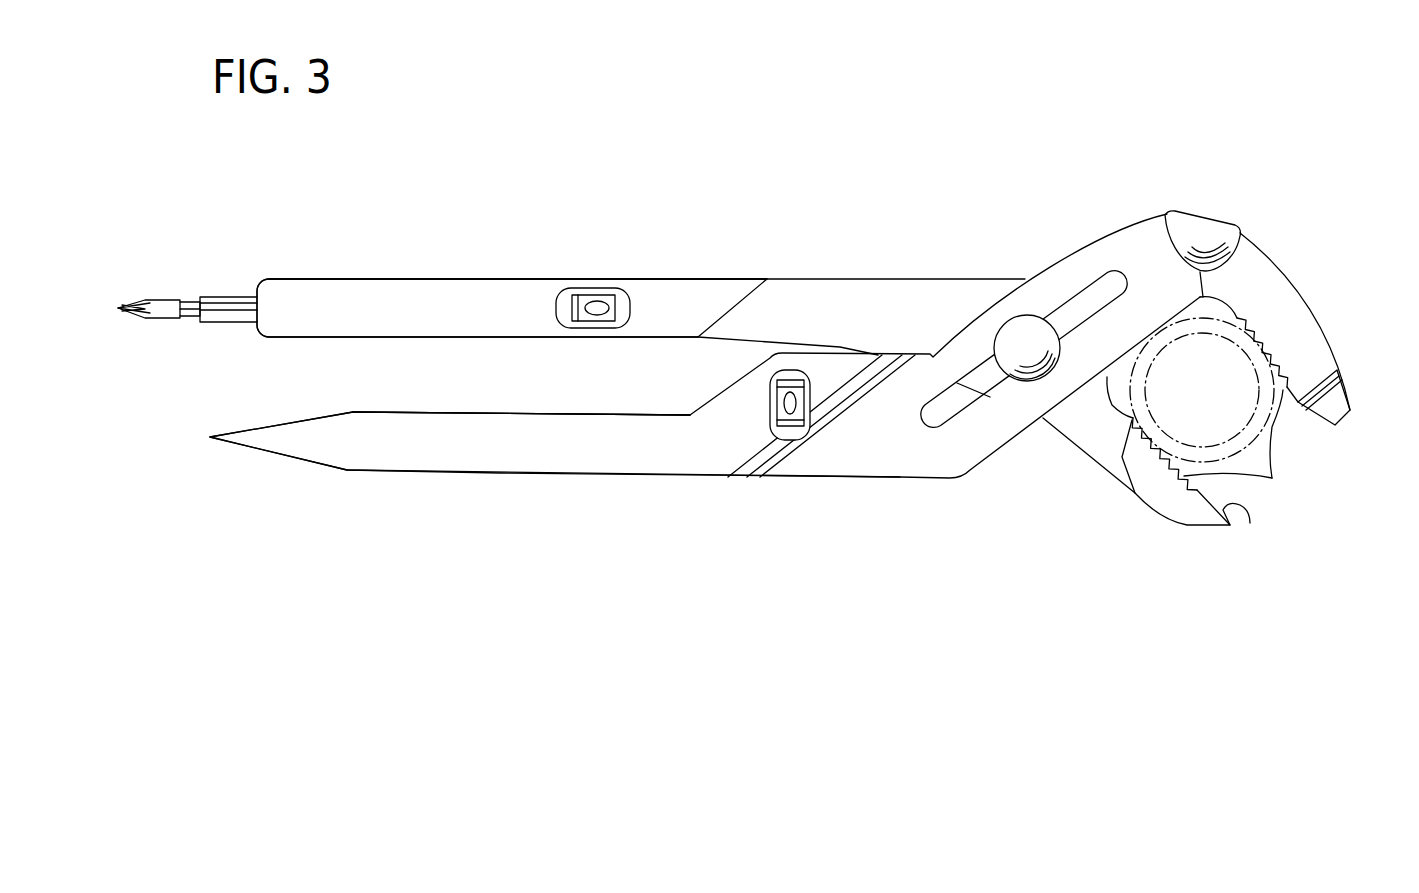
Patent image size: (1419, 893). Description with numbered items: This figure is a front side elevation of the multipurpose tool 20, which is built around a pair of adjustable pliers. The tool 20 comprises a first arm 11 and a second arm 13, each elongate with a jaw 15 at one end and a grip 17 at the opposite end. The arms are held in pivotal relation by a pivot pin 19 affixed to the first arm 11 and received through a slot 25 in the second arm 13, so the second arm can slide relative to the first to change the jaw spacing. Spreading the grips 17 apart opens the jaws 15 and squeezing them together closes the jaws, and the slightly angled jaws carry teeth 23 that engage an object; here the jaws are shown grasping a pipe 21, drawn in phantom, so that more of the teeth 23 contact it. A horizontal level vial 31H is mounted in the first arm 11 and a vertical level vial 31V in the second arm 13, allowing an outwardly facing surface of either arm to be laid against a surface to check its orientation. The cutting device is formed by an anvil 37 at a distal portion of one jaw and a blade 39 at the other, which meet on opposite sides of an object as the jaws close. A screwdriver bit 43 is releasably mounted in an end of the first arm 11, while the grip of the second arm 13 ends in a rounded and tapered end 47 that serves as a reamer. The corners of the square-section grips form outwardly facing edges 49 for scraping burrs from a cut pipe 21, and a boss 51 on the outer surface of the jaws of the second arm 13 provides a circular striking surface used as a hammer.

The multipurpose tool 20 is at (870, 138).
The first arm 11 is at (763, 271).
The second arm 13 is at (699, 481).
The jaw 15 is at (1288, 307).
The grip 17 is at (357, 298).
The pivot pin 19 is at (1020, 333).
The pipe 21 is at (1199, 447).
The teeth 23 is at (1272, 478).
The slot 25 is at (945, 413).
The horizontal level vial 31H is at (622, 305).
The vertical level vial 31V is at (790, 432).
The anvil 37 is at (1250, 523).
The blade 39 is at (1330, 405).
The screwdriver bit 43 is at (168, 308).
The rounded and tapered end 47 is at (203, 440).
The outwardly facing edges 49 is at (500, 278).
The boss 51 is at (1205, 212).